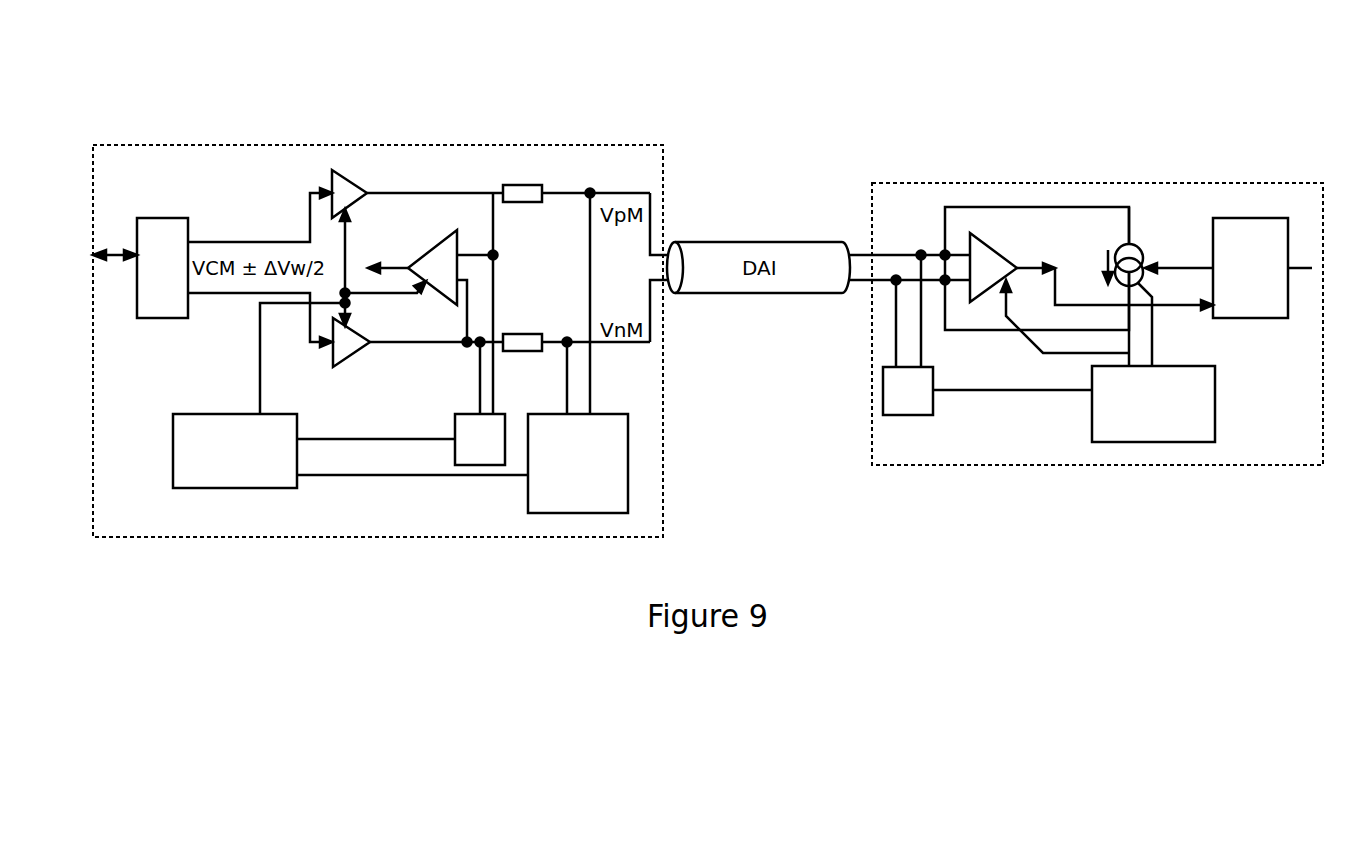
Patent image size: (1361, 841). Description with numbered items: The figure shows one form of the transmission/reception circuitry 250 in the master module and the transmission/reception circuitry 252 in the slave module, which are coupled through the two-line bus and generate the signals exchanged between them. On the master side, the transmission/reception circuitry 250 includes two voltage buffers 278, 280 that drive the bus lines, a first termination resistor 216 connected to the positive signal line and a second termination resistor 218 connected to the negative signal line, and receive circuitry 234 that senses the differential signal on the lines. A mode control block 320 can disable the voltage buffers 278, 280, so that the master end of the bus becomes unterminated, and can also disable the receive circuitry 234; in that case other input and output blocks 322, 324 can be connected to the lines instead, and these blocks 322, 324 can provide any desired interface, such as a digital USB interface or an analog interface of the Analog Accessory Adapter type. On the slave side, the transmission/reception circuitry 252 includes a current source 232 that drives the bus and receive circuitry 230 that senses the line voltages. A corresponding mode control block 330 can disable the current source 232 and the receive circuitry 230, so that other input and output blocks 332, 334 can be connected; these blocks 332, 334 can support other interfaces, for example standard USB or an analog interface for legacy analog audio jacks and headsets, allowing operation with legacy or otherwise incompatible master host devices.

The transmission/reception circuitry 250 is at (481, 145).
The transmission/reception circuitry 252 is at (1207, 183).
The voltage buffer 278 is at (361, 183).
The voltage buffer 280 is at (353, 357).
The receive circuitry 234 is at (437, 245).
The first termination resistor 216 is at (535, 183).
The second termination resistor 218 is at (545, 330).
The mode control block 320 is at (190, 413).
The input and output block 322 is at (462, 413).
The input and output block 324 is at (528, 493).
The receive circuitry 230 is at (1005, 252).
The current source 232 is at (1140, 250).
The input and output block 332 is at (933, 385).
The mode control block 330 is at (1215, 420).
The input and output block 334 is at (1272, 320).